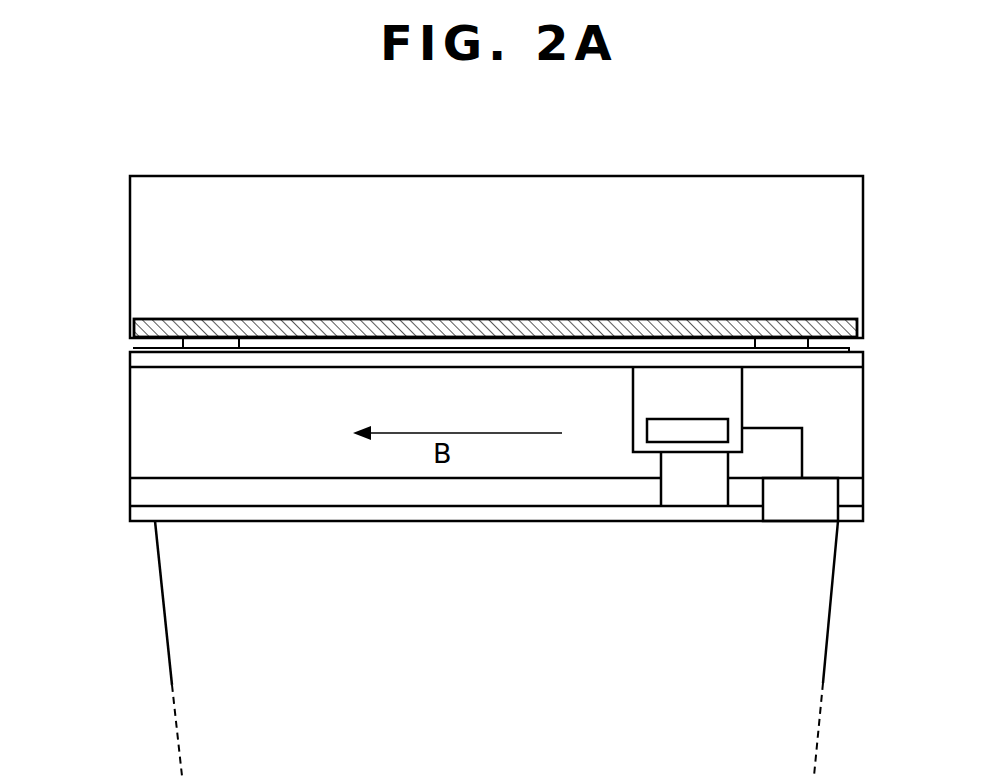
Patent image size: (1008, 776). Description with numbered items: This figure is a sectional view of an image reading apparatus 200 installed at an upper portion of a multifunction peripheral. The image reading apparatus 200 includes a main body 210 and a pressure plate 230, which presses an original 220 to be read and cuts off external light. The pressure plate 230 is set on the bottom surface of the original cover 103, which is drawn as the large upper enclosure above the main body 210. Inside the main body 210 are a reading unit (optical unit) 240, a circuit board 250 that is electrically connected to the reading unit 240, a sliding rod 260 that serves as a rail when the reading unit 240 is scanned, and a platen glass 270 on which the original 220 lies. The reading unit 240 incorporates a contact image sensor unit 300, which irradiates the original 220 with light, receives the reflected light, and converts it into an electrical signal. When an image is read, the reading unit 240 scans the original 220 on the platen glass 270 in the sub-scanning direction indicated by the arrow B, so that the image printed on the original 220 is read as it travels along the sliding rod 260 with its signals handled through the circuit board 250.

The image reading apparatus 200 is at (525, 143).
The original cover 103 is at (130, 228).
The pressure plate 230 is at (863, 327).
The original 220 is at (130, 350).
The main body 210 is at (130, 423).
The reading unit (optical unit) 240 is at (688, 395).
The contact image sensor (CIS) unit 300 is at (692, 429).
The circuit board 250 is at (800, 498).
The sliding rod 260 is at (492, 490).
The platen glass 270 is at (295, 367).